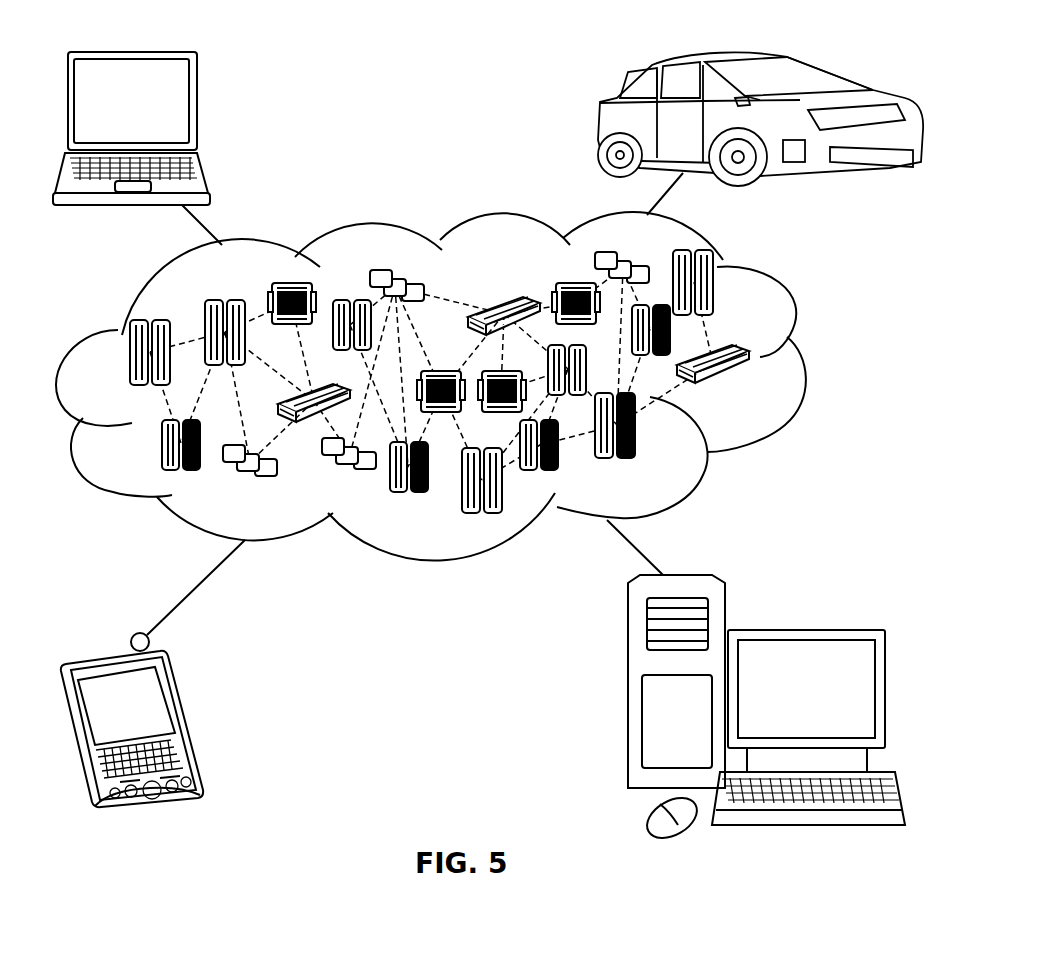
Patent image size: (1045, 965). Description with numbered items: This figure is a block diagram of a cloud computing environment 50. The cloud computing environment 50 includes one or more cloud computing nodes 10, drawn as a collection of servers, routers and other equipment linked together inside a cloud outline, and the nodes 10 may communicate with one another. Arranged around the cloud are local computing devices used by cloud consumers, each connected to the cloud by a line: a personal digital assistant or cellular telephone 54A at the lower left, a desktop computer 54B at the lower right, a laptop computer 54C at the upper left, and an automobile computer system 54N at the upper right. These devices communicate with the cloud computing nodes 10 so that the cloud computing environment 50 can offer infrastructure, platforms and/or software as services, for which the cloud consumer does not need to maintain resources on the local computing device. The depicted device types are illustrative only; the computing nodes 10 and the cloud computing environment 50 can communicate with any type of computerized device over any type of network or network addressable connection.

The cloud computing environment 50 is at (807, 362).
The cloud computing nodes 10 is at (752, 392).
The personal digital assistant or cellular telephone 54A is at (187, 717).
The desktop computer 54B is at (803, 630).
The laptop computer 54C is at (197, 108).
The automobile computer system 54N is at (600, 122).